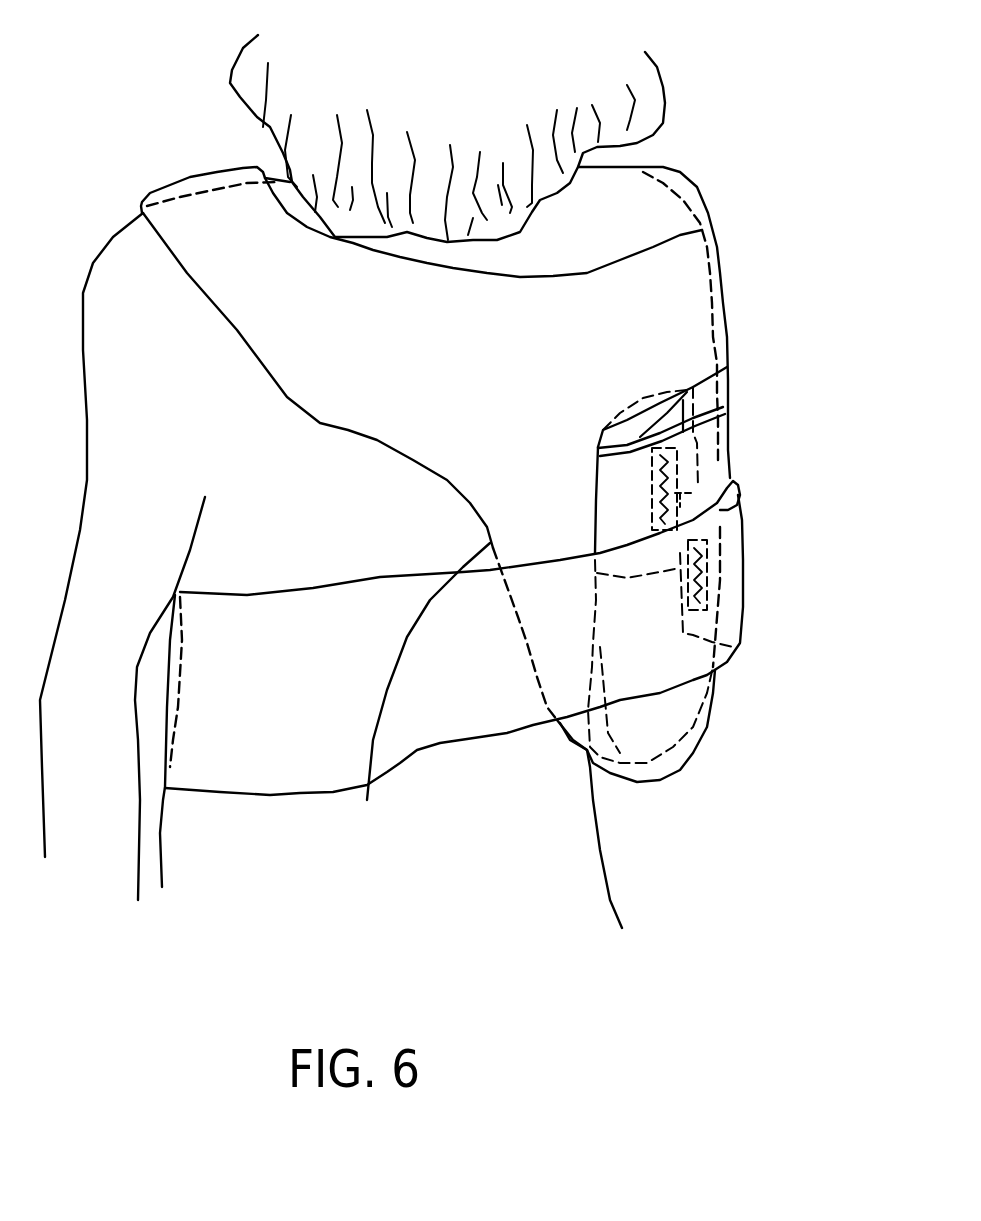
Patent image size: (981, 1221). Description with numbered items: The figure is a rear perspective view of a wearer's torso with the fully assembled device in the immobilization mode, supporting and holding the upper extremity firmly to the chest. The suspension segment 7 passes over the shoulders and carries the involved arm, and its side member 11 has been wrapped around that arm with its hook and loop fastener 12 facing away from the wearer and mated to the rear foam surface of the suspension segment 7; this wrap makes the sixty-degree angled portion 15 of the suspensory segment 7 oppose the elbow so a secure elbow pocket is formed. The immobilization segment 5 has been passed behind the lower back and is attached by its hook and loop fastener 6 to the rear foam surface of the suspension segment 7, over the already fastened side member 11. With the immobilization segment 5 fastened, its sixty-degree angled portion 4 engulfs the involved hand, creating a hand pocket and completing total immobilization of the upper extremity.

The angled portion of the immobilization segment 4 is at (270, 795).
The immobilization segment 5 is at (507, 733).
The hook and loop fastener 6 is at (697, 578).
The suspension segment 7 is at (190, 177).
The side member of the suspension segment 11 is at (700, 380).
The hook and loop fastener 12 is at (660, 475).
The angled portion of the suspensory segment 15 is at (367, 800).